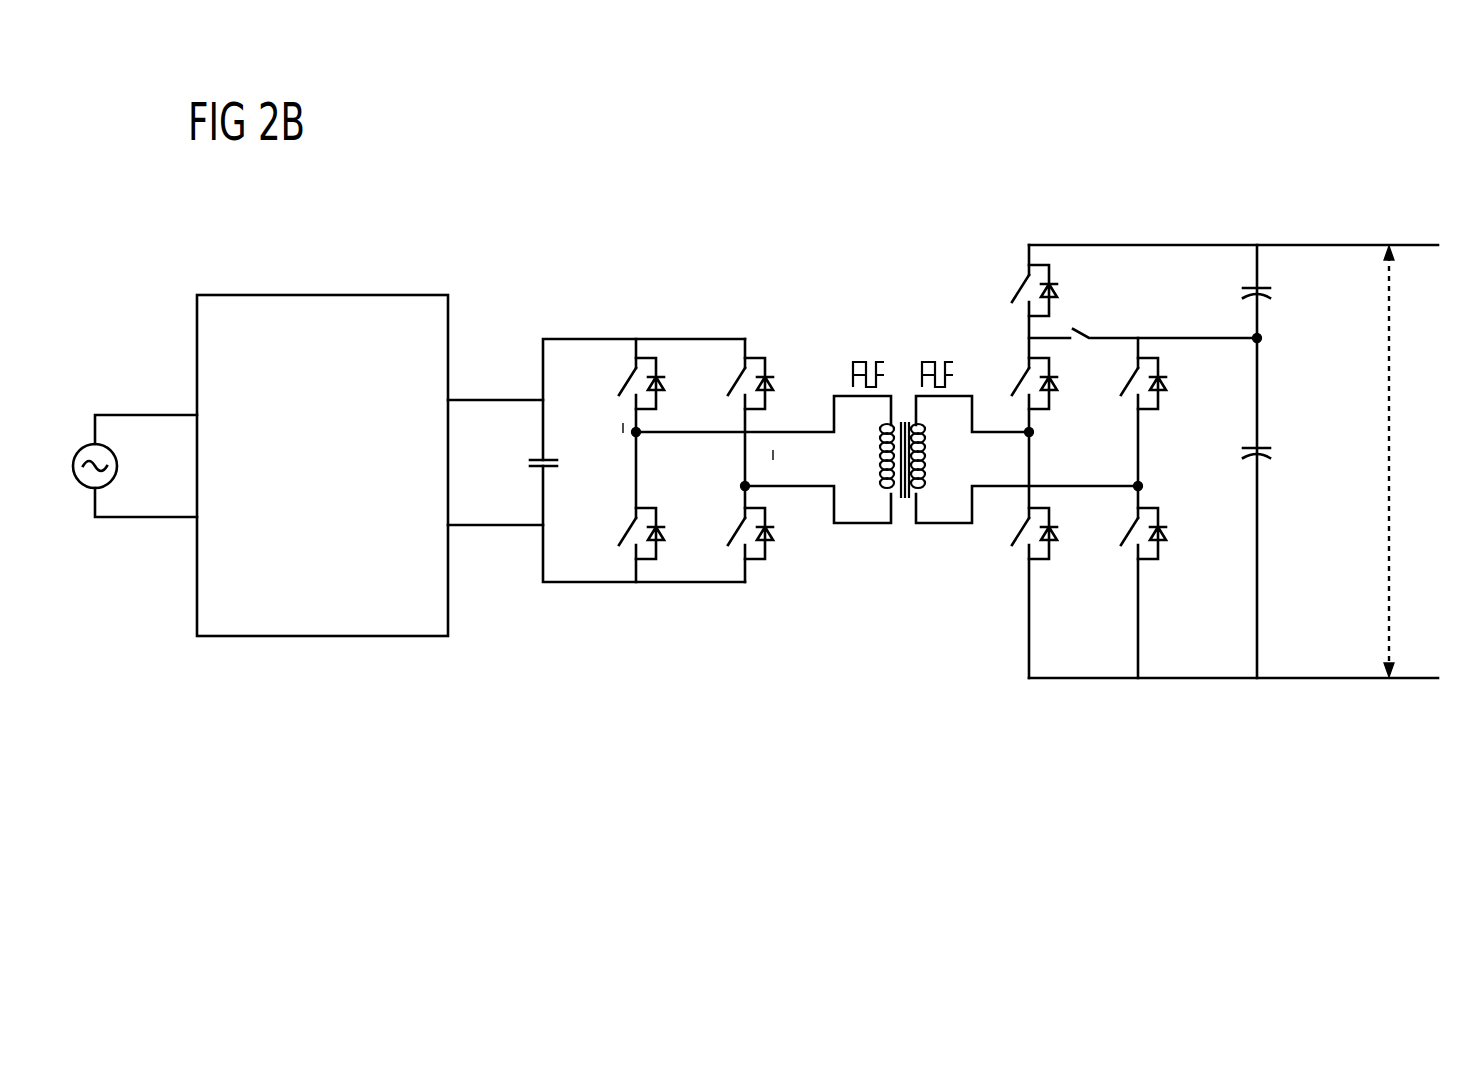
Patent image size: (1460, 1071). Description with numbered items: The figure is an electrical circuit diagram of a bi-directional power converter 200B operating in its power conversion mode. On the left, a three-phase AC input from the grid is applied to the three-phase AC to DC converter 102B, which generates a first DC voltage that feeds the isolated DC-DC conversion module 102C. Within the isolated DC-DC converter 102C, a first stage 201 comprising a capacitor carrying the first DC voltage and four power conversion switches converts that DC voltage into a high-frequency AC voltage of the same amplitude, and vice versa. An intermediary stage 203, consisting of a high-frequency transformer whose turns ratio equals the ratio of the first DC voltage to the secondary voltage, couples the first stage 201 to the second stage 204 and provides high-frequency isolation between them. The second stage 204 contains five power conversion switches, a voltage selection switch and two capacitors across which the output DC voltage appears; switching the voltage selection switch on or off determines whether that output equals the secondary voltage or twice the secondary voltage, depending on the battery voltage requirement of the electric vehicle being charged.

The bi-directional power converter 200B is at (1361, 141).
The 3-phase AC to DC converter 102B is at (354, 481).
The isolated DC-DC conversion module 102C is at (389, 222).
The first stage 201 is at (745, 610).
The intermediary stage 203 is at (1022, 610).
The second stage 204 is at (1430, 716).